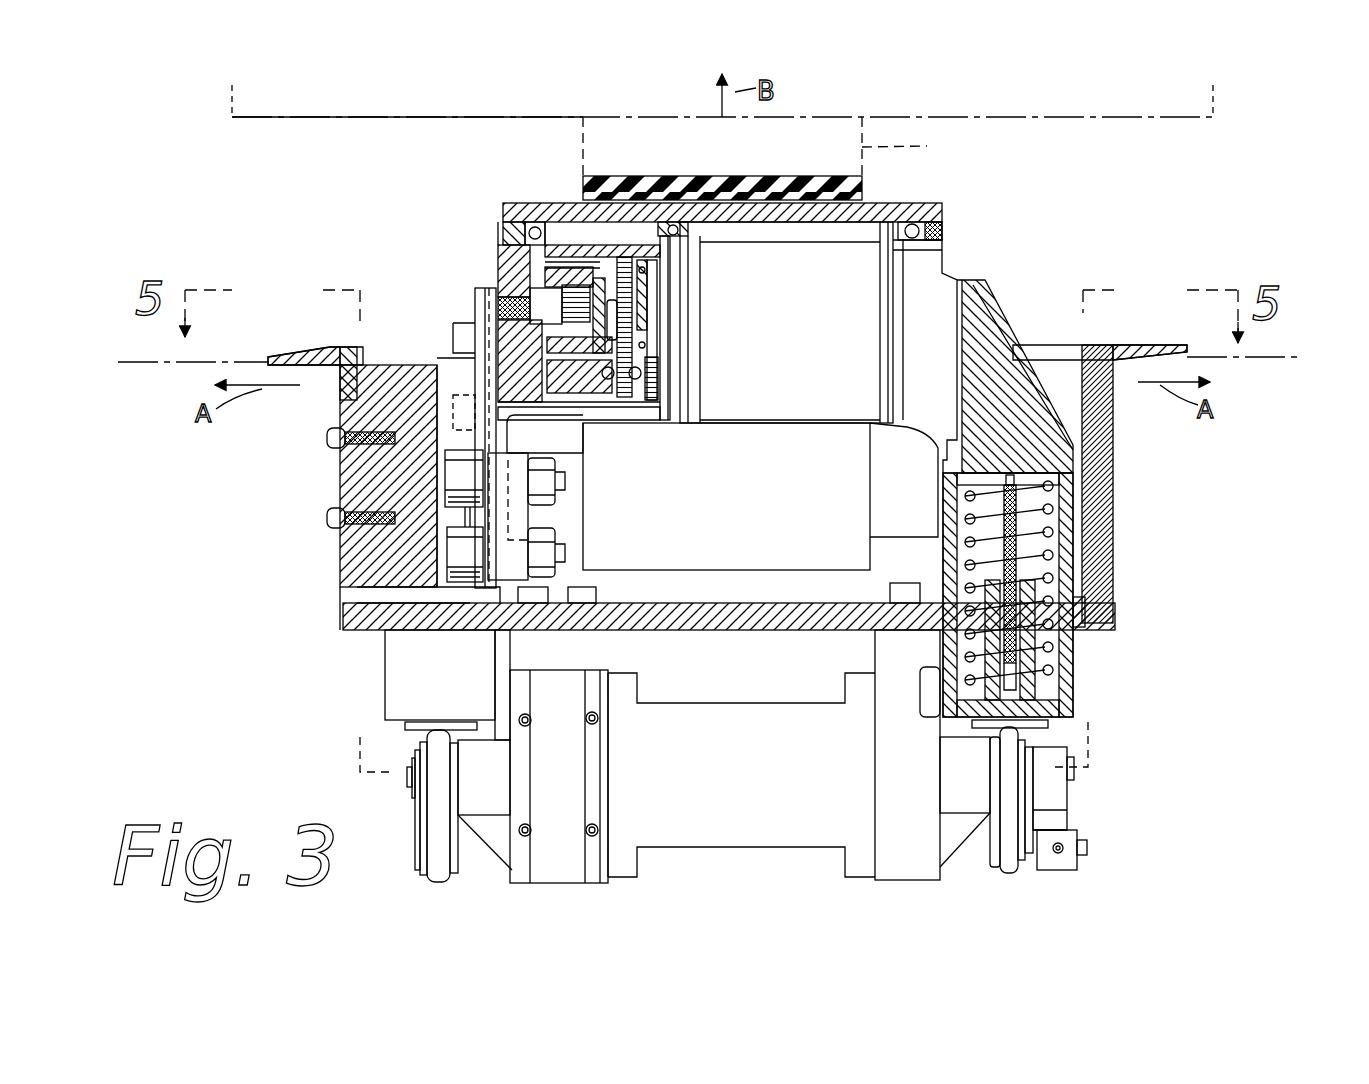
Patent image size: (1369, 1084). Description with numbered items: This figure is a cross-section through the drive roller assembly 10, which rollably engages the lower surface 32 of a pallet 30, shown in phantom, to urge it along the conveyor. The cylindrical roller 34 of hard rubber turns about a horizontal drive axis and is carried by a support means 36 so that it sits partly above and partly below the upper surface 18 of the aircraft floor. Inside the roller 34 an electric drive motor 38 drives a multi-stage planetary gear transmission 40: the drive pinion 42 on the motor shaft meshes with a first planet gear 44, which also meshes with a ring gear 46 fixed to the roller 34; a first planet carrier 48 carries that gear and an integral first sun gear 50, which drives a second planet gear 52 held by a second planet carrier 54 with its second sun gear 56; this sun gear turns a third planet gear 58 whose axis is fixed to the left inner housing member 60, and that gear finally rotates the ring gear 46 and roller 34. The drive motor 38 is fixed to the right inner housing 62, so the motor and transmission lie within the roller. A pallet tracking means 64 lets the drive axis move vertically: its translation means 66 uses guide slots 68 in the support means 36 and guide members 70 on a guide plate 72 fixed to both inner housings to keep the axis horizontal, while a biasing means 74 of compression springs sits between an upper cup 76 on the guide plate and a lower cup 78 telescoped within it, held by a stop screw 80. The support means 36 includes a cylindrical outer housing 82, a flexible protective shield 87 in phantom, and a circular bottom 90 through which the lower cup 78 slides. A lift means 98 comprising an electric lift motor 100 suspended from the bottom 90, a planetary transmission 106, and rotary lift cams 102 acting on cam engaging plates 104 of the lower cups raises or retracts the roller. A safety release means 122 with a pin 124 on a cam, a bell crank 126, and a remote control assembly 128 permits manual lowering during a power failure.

The drive roller assembly 10 is at (1064, 218).
The upper surface 18 is at (1280, 356).
The pallet 30 is at (230, 120).
The lower surface 32 is at (400, 118).
The cylindrical roller 34 is at (865, 180).
The support means 36 is at (313, 347).
The electric drive motor 38 is at (812, 247).
The multi-stage planetary gear transmission 40 is at (660, 332).
The drive pinion 42 is at (660, 382).
The first planet gear 44 is at (660, 276).
The ring gear 46 is at (556, 222).
The first planet carrier 48 is at (648, 300).
The first sun gear 50 is at (630, 398).
The second planet gear 52 is at (640, 262).
The second planet carrier 54 is at (608, 262).
The second sun gear 56 is at (583, 412).
The third planet gear 58 is at (560, 262).
The left inner housing member 60 is at (502, 298).
The right inner housing 62 is at (940, 258).
The pallet tracking means 64 is at (1077, 675).
The translation means 66 is at (445, 484).
The guide slots 68 is at (437, 533).
The guide members 70 is at (468, 458).
The guide plate 72 is at (520, 523).
The biasing means 74 is at (1000, 538).
The upper cup 76 is at (1070, 497).
The lower cup 78 is at (1073, 645).
The stop screw 80 is at (1000, 556).
The cylindrical outer housing 82 is at (1113, 556).
The flexible protective shield 87 is at (1005, 298).
The circular bottom 90 is at (800, 632).
The lift means 98 is at (902, 888).
The electric lift motor 100 is at (760, 823).
The rotary lift cam 102 is at (440, 882).
The cam engaging plate 104 is at (440, 730).
The two stage planetary gear set transmission 106 is at (567, 883).
The safety release means 122 is at (1090, 848).
The pin 124 is at (1060, 817).
The bell crank 126 is at (1062, 790).
The motion transmitting remote control assembly 128 is at (1062, 852).